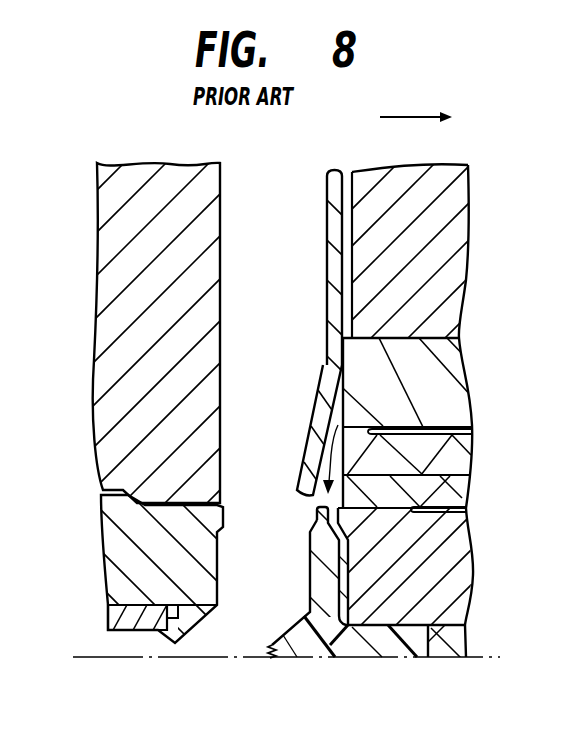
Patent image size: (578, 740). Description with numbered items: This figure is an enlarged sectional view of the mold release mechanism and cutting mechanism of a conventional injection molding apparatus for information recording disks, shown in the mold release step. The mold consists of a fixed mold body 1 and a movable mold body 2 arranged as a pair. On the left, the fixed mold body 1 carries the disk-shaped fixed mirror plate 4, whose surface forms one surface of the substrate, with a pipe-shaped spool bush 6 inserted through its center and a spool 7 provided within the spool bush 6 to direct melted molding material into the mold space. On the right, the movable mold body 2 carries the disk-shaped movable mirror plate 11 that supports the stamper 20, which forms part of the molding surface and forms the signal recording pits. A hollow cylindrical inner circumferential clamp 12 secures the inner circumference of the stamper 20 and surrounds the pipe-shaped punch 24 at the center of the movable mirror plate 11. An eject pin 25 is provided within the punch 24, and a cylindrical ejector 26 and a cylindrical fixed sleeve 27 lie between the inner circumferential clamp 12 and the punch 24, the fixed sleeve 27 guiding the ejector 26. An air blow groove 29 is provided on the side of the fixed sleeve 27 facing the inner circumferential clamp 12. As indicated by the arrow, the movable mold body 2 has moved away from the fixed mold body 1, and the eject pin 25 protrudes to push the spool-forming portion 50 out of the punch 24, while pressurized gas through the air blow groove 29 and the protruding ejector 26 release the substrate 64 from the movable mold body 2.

The fixed mold body 1 is at (90, 173).
The movable mold body 2 is at (483, 181).
The fixed mirror plate 4 is at (117, 294).
The spool bush 6 is at (117, 542).
The spool 7 is at (117, 607).
The movable mirror plate 11 is at (447, 257).
The inner circumferential clamp 12 is at (450, 363).
The stamper 20 is at (348, 177).
The punch 24 is at (450, 598).
The eject pin 25 is at (447, 657).
The ejector 26 is at (437, 498).
The fixed sleeve 27 is at (447, 463).
The air blow groove 29 is at (427, 421).
The spool-forming portion 50 is at (355, 648).
The substrate 64 is at (333, 172).